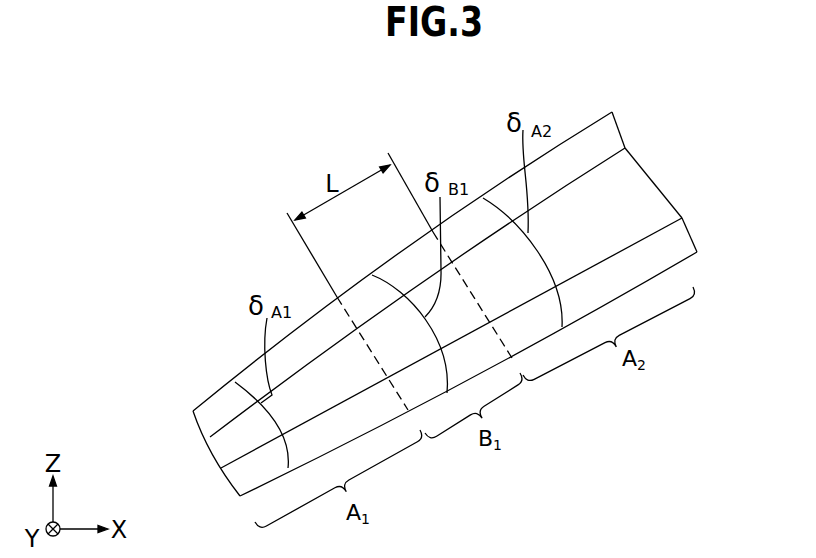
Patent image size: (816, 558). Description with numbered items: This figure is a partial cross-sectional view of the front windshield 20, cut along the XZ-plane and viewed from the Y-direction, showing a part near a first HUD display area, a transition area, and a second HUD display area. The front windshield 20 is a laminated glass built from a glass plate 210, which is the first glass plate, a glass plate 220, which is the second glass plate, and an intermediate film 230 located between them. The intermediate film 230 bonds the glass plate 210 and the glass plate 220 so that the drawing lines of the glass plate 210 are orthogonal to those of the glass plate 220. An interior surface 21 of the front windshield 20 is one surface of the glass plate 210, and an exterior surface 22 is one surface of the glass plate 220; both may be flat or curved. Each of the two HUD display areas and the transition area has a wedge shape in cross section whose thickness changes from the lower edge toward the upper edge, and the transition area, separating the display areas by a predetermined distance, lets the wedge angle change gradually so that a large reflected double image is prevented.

The front windshield 20 is at (484, 281).
The interior surface 21 is at (493, 374).
The exterior surface 22 is at (575, 137).
The glass plate 210 is at (713, 222).
The glass plate 220 is at (652, 110).
The intermediate film 230 is at (685, 163).